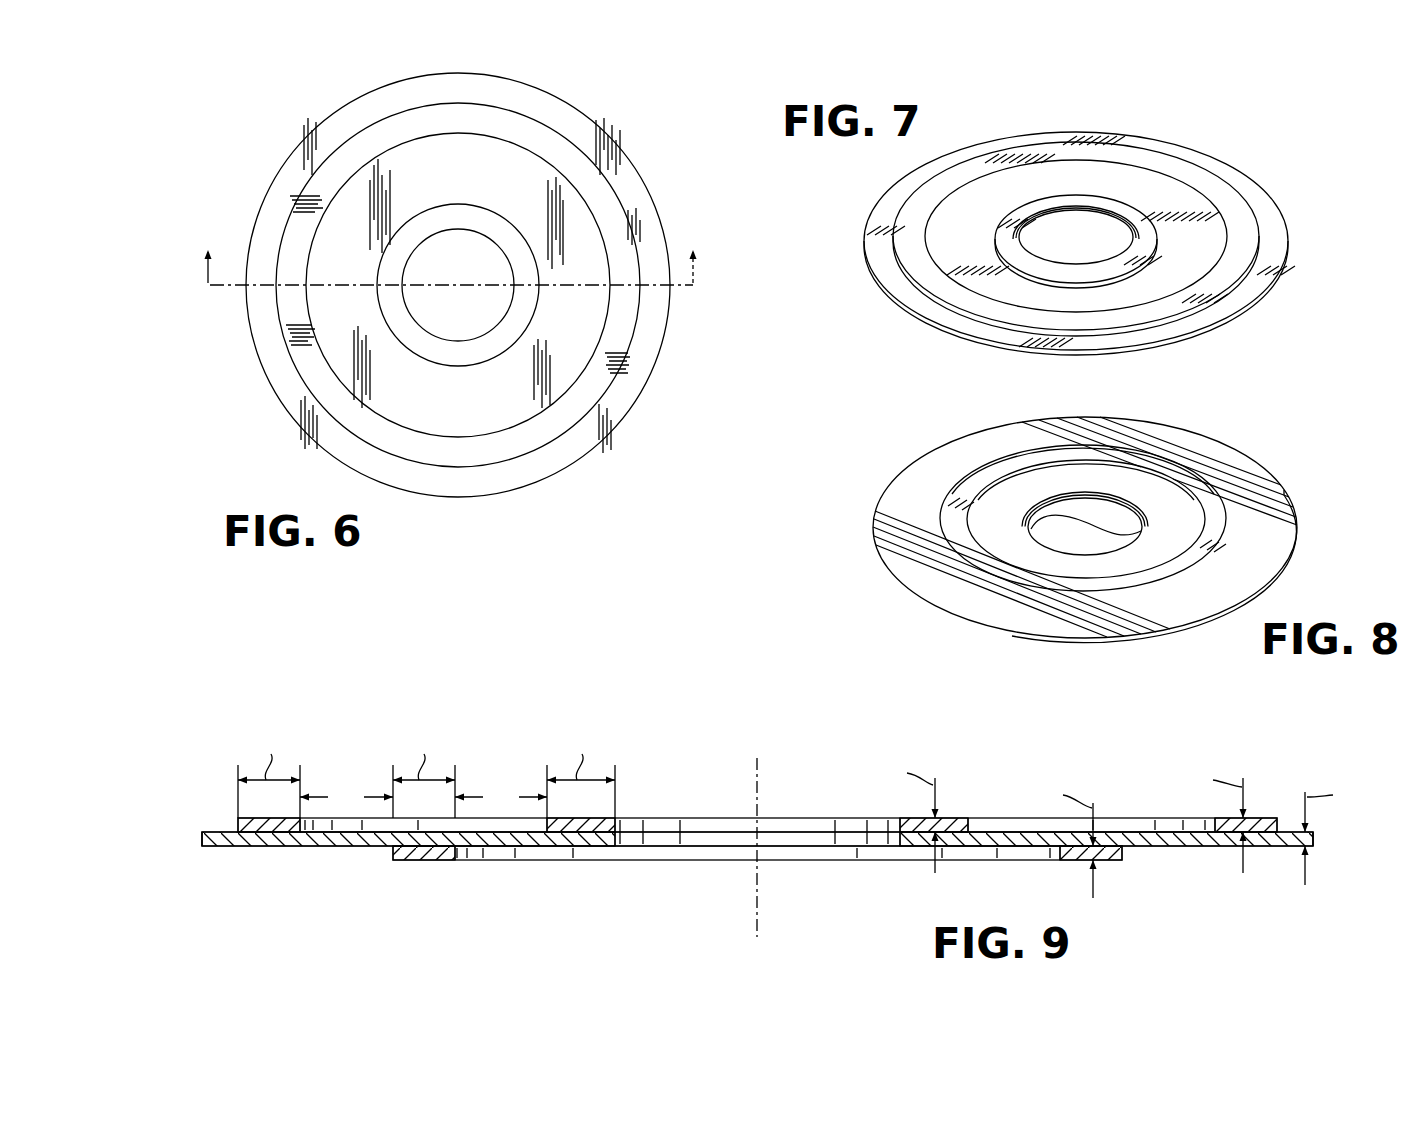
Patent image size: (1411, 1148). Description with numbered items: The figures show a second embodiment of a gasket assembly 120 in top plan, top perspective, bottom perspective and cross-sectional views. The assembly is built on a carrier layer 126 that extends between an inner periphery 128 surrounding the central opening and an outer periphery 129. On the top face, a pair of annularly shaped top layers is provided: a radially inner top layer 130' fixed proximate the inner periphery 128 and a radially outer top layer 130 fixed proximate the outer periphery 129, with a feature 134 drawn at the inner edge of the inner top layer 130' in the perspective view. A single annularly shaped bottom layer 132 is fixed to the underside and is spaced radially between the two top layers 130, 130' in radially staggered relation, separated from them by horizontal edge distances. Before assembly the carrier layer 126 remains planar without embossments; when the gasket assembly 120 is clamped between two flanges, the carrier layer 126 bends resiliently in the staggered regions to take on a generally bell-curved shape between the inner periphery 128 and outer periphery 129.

In FIG. 6, the gasket assembly 120 is at (200, 102).
In FIG. 7, the gasket assembly 120 is at (1318, 91).
In FIG. 8, the gasket assembly 120 is at (1311, 389).
In FIG. 9, the gasket assembly 120 is at (198, 692).
In FIG. 6, the carrier layer 126 is at (496, 418).
In FIG. 7, the carrier layer 126 is at (1065, 180).
In FIG. 8, the carrier layer 126 is at (923, 584).
In FIG. 9, the carrier layer 126 is at (272, 846).
In FIG. 6, the inner periphery 128 is at (500, 325).
In FIG. 8, the inner periphery 128 is at (1142, 537).
In FIG. 9, the inner periphery 128 is at (617, 835).
In FIG. 6, the outer periphery 129 is at (636, 408).
In FIG. 7, the outer periphery 129 is at (1288, 236).
In FIG. 8, the outer periphery 129 is at (1297, 538).
In FIG. 9, the outer periphery 129 is at (1317, 838).
In FIG. 6, the outer top layer 130 is at (458, 265).
In FIG. 7, the outer top layer 130 is at (1033, 239).
In FIG. 9, the outer top layer 130 is at (773, 783).
In FIG. 6, the inner top layer 130' is at (458, 260).
In FIG. 7, the inner top layer 130' is at (1078, 191).
In FIG. 9, the inner top layer 130' is at (777, 783).
In FIG. 8, the bottom layer 132 is at (1180, 475).
In FIG. 9, the bottom layer 132 is at (435, 860).
In FIG. 7, the chamfered edge 134 is at (1117, 209).